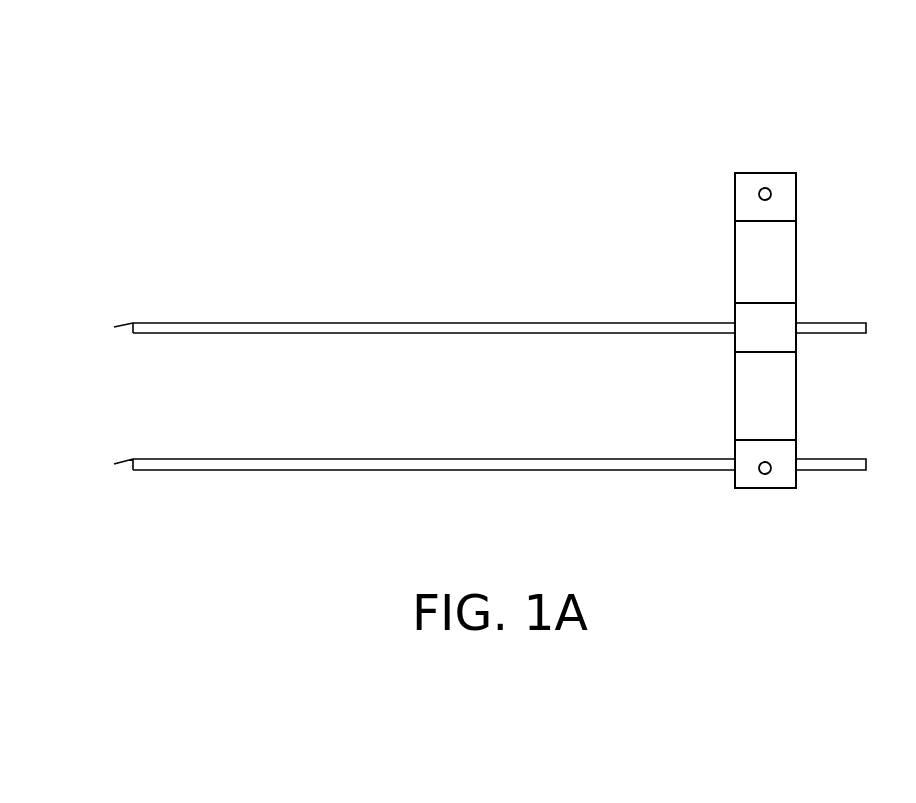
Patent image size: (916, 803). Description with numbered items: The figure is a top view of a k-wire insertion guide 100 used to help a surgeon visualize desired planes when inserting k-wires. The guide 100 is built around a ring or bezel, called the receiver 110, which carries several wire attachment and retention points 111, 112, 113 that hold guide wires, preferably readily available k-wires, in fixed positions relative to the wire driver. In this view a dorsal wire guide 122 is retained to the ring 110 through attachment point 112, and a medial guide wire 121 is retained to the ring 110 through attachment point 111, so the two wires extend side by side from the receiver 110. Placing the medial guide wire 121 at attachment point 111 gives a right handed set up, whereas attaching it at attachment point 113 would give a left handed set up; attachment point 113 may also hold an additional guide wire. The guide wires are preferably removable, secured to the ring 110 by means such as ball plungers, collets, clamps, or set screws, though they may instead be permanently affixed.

The k-wire insertion guide 100 is at (687, 137).
The ring or bezel (receiver) 110 is at (796, 232).
The wire attachment and retention point 111 is at (766, 488).
The wire attachment and retention point 112 is at (796, 340).
The wire attachment and retention point 113 is at (735, 197).
The medial guide wire 121 is at (465, 471).
The dorsal wire guide 122 is at (465, 334).